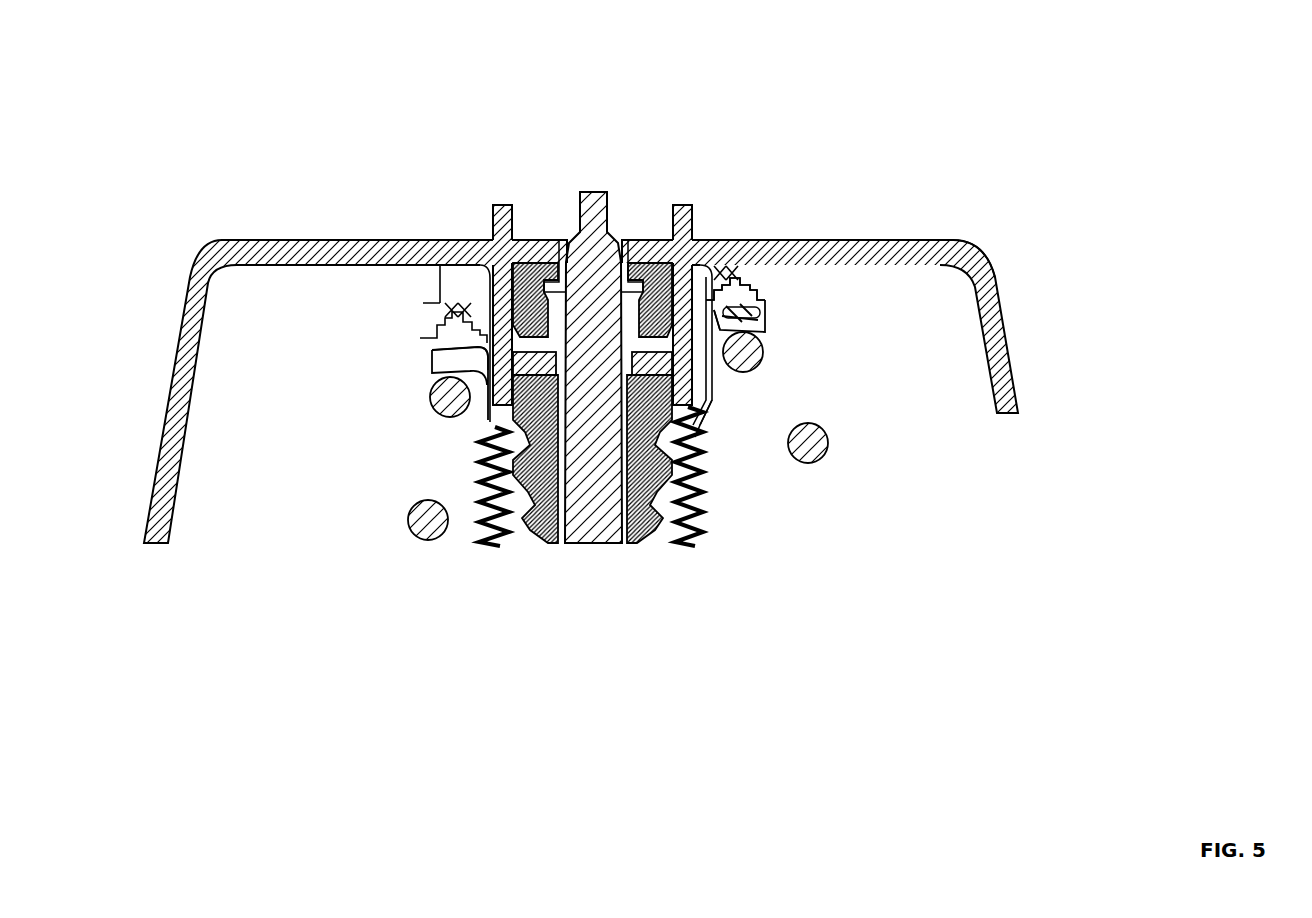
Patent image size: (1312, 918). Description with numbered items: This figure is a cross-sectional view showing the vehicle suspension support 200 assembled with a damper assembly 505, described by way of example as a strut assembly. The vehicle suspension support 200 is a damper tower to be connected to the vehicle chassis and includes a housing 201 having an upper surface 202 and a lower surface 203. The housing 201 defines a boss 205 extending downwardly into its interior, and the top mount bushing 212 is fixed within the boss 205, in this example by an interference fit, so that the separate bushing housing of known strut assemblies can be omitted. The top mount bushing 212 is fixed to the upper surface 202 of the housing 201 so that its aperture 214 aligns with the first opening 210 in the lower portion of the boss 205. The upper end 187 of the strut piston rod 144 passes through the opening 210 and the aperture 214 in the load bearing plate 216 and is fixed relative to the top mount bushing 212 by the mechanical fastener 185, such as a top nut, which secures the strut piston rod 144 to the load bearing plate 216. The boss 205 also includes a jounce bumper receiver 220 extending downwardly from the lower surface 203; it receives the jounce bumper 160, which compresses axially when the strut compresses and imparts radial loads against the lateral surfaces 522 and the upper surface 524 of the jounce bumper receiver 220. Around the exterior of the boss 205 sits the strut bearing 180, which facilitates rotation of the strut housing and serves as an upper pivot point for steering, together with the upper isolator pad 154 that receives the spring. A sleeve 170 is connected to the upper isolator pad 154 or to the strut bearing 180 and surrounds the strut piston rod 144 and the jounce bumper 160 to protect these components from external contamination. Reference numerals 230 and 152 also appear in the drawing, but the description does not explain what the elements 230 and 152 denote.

The vehicle suspension support 200 is at (1090, 224).
The housing 201 is at (170, 510).
The upper surface 202 is at (257, 240).
The lower surface 203 is at (911, 265).
The boss 205 is at (473, 285).
The first opening 210 is at (633, 363).
The top mount bushing 212 is at (535, 252).
The aperture 214 is at (713, 278).
The load bearing plate 216 is at (493, 255).
The jounce bumper receiver 220 is at (680, 407).
The outer post 230 is at (637, 232).
The strut piston rod 144 is at (577, 545).
The ball 152 is at (412, 528).
The upper isolator pad 154 is at (767, 308).
The jounce bumper 160 is at (537, 545).
The sleeve 170 is at (485, 515).
The strut bearing 180 is at (753, 290).
The mechanical fastener 185 is at (573, 262).
The upper end 187 is at (592, 200).
The damper assembly 505 is at (778, 484).
The lateral surfaces 522 is at (495, 405).
The upper surface 524 is at (530, 373).